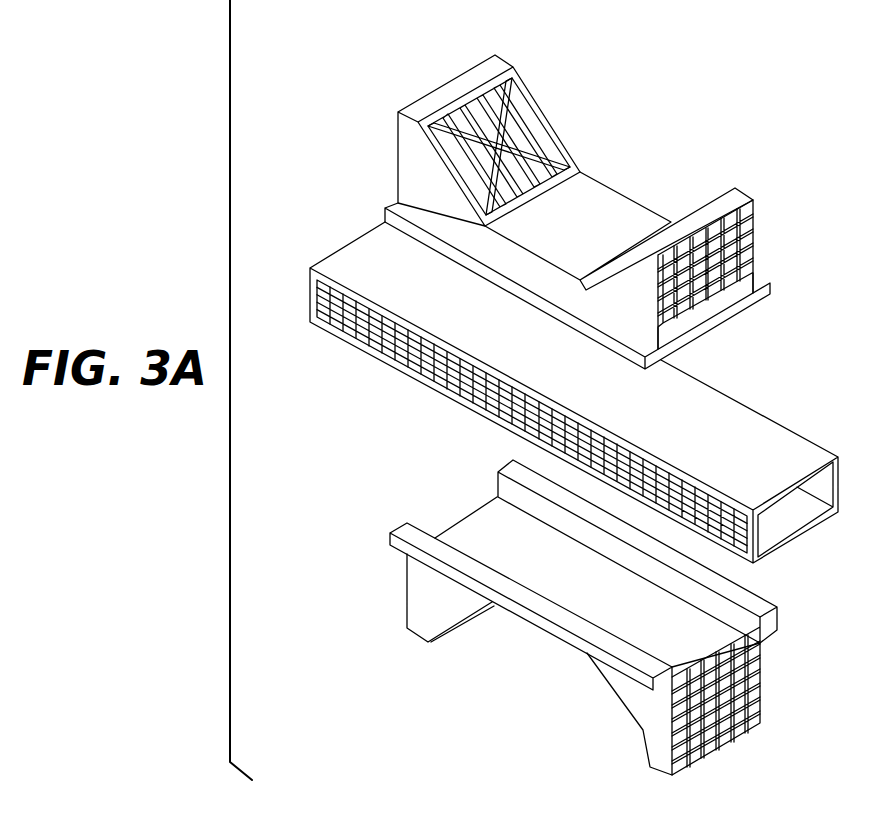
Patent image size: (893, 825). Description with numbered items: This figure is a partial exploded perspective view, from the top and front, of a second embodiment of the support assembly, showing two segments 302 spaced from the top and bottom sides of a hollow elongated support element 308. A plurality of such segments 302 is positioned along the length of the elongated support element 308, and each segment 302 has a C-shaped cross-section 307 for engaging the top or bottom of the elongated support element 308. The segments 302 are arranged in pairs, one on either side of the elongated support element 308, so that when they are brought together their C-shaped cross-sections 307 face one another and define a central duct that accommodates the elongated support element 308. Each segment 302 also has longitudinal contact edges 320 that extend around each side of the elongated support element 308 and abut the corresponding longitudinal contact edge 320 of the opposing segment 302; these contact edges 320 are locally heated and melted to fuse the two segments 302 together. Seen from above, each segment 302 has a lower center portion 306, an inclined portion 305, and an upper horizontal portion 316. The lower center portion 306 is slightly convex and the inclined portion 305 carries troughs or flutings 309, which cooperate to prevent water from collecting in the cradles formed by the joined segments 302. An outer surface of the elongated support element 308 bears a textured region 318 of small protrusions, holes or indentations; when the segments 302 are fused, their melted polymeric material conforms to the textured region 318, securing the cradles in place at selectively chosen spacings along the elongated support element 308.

The segment 302 is at (540, 185).
The inclined portion 305 is at (532, 92).
The lower center portion 306 is at (618, 217).
The C-shaped cross-section 307 is at (697, 310).
The elongated support element 308 is at (747, 430).
The troughs or flutings 309 is at (518, 110).
The upper horizontal portion 316 is at (482, 60).
The textured region 318 is at (313, 298).
The longitudinal contact edges 320 is at (396, 208).